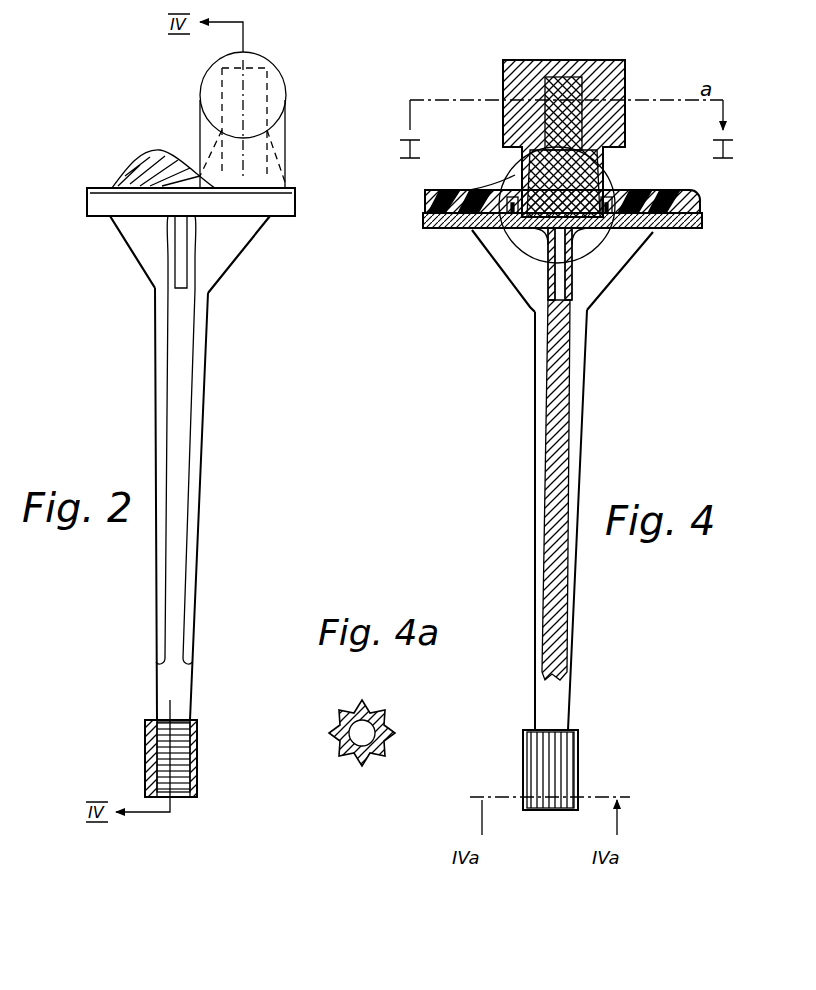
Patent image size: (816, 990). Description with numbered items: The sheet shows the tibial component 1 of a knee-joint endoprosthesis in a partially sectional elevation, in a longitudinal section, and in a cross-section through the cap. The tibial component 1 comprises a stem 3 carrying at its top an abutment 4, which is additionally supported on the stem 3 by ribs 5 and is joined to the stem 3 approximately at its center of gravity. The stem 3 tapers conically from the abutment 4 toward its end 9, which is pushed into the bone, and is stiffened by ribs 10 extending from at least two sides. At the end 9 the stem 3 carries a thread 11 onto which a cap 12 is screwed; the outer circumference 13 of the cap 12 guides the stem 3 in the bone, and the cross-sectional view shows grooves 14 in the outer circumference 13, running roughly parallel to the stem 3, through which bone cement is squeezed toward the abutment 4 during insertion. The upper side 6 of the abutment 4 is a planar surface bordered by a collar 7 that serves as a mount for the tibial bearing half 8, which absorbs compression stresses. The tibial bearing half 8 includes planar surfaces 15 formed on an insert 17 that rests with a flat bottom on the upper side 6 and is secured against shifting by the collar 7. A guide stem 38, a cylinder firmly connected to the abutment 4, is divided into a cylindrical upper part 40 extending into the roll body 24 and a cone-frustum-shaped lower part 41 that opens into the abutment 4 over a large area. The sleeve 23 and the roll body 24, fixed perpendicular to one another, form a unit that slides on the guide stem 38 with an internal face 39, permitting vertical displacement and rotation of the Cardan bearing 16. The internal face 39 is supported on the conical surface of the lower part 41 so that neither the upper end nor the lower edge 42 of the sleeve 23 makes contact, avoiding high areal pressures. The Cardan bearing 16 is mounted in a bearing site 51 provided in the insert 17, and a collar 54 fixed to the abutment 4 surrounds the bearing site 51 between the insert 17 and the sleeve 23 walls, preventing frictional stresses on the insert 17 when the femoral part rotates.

In FIG. 2, the tibial component 1 is at (208, 452).
In FIG. 4, the tibial component 1 is at (590, 460).
In FIG. 2, the stem 3 is at (190, 563).
In FIG. 4, the stem 3 is at (568, 580).
In FIG. 2, the abutment 4 is at (275, 200).
In FIG. 2, the ribs 5 is at (135, 222).
In FIG. 4, the ribs 5 is at (598, 275).
In FIG. 4, the upper side 6 is at (685, 190).
In FIG. 4, the collar 7 is at (702, 218).
In FIG. 4, the tibial bearing half 8 is at (418, 185).
In FIG. 2, the end 9 is at (186, 806).
In FIG. 4, the end 9 is at (563, 810).
In FIG. 2, the ribs 10 is at (176, 380).
In FIG. 4, the ribs 10 is at (560, 390).
In FIG. 2, the thread 11 is at (150, 745).
In FIG. 2, the cap 12 is at (185, 778).
In FIG. 4, the cap 12 is at (576, 782).
In FIG. 4a, the cap 12 is at (350, 712).
In FIG. 2, the outer circumference 13 is at (197, 742).
In FIG. 4, the outer circumference 13 is at (578, 752).
In FIG. 4a, the grooves 14 is at (370, 712).
In FIG. 4, the planar surfaces 15 is at (440, 185).
In FIG. 4, the Cardan bearing 16 is at (503, 100).
In FIG. 4, the insert 17 is at (440, 228).
In FIG. 2, the sleeve 23 is at (275, 160).
In FIG. 4, the sleeve 23 is at (603, 165).
In FIG. 2, the roll body 24 is at (272, 85).
In FIG. 4, the roll body 24 is at (618, 78).
In FIG. 4, the guide stem 38 is at (588, 97).
In FIG. 4, the internal face 39 is at (520, 95).
In FIG. 4, the upper part 40 is at (575, 105).
In FIG. 4, the lower part 41 is at (556, 158).
In FIG. 4, the lower edge 42 is at (592, 248).
In FIG. 4, the bearing site 51 is at (512, 196).
In FIG. 4, the collar 54 is at (508, 220).